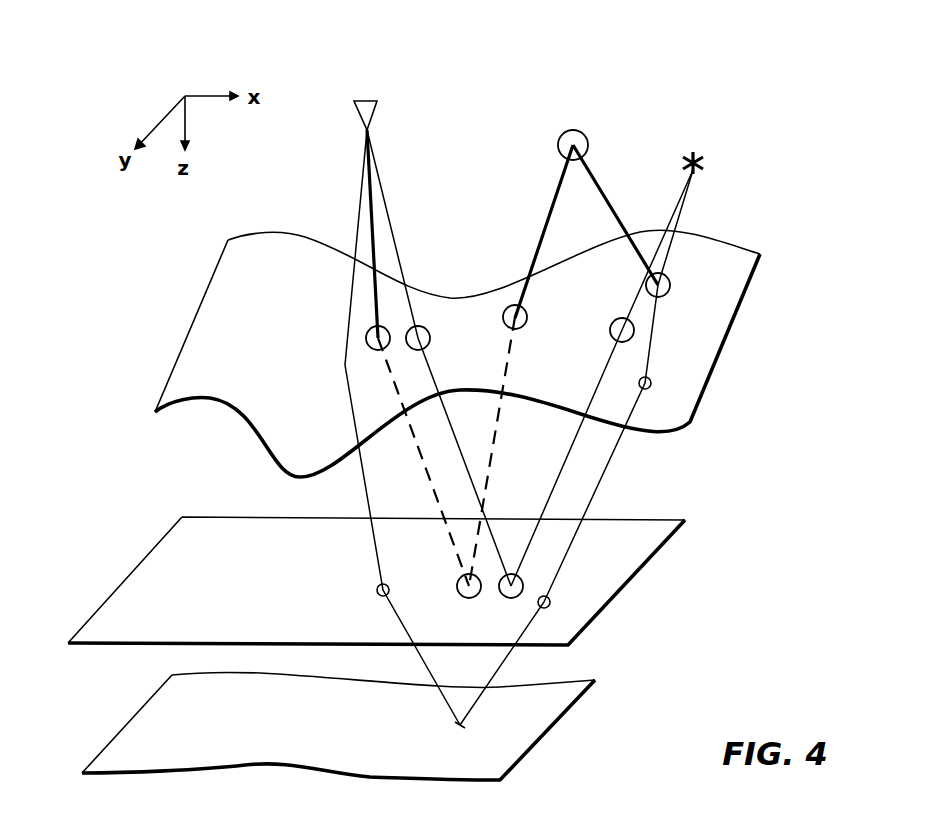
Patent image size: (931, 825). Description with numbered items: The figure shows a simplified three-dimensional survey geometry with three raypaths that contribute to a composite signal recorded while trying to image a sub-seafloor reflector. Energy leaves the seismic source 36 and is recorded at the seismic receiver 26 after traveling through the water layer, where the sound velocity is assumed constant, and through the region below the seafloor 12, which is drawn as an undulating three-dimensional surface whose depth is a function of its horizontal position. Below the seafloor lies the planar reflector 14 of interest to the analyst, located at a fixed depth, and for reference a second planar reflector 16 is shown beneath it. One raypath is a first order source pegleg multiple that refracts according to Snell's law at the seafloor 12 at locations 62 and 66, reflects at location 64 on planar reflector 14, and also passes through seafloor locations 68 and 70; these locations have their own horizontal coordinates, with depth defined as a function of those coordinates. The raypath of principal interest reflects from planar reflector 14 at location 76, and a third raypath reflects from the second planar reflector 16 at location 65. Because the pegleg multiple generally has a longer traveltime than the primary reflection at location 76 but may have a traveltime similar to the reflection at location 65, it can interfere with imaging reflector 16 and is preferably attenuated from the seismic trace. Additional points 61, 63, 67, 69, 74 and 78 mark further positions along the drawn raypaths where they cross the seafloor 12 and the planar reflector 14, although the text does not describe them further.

The seafloor 12 is at (727, 290).
The planar reflector 14 is at (618, 578).
The second planar reflector 16 is at (558, 707).
The seismic receiver 26 is at (377, 108).
The seismic source 36 is at (700, 160).
The incident light beam 61 is at (343, 373).
The refraction location 62 is at (389, 328).
The transmission point through middle plate 63 is at (377, 586).
The reflection location 64 is at (457, 583).
The reflection location on second reflector 65 is at (460, 725).
The refraction location 66 is at (504, 313).
The transmission point through middle plate 67 is at (550, 603).
The seafloor location 68 is at (586, 138).
The exit point from upper plate 69 is at (651, 383).
The seafloor location 70 is at (672, 290).
The refraction point 74 is at (432, 335).
The reflection location of principal interest 76 is at (524, 581).
The refraction point 78 is at (635, 332).